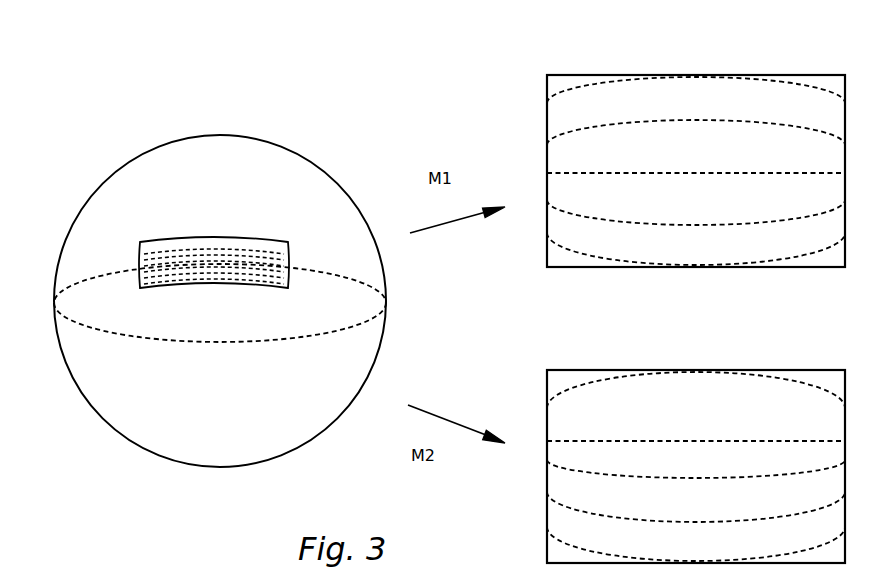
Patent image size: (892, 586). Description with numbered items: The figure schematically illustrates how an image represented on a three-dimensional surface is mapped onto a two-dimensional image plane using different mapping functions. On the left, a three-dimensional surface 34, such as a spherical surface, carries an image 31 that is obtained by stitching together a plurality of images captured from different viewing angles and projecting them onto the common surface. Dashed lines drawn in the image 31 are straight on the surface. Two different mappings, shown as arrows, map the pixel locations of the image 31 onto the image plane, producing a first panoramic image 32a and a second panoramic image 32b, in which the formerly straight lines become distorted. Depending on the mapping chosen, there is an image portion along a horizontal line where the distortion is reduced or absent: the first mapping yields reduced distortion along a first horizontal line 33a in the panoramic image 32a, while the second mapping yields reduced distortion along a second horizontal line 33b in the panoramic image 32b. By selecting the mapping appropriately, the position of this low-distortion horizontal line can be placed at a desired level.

The three-dimensional surface 34 is at (200, 135).
The image represented on the three-dimensional surface 31 is at (207, 237).
The panoramic image 32a is at (696, 147).
The first horizontal line 33a is at (735, 173).
The panoramic image 32b is at (696, 445).
The second horizontal line 33b is at (745, 441).